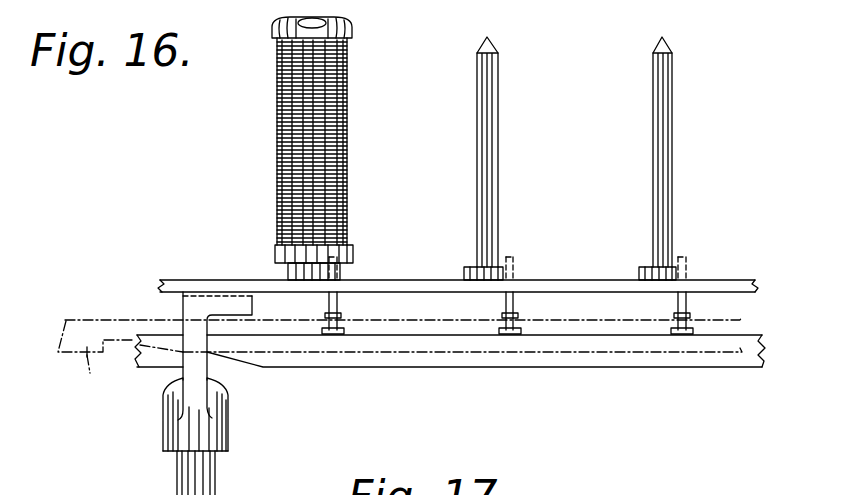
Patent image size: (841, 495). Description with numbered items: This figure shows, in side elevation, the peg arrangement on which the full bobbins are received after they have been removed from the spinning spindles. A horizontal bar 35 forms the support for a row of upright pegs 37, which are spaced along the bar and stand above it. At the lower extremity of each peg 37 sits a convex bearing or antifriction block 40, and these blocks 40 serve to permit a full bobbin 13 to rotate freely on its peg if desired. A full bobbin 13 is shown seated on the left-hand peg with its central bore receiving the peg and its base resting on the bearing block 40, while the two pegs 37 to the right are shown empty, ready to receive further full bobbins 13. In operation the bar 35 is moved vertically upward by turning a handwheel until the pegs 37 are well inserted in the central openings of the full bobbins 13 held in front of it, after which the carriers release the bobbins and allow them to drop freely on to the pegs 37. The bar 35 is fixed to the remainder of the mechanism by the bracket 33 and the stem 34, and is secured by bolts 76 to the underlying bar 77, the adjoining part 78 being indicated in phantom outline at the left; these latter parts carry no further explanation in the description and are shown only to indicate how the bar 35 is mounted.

The full bobbin 13 is at (278, 128).
The bracket 33 is at (195, 313).
The stem socket 34 is at (208, 428).
The bar 35 is at (170, 280).
The peg 37 is at (658, 72).
The convex bearing block 40 is at (290, 272).
The bolts 76 is at (338, 302).
The bar 77 is at (498, 342).
The phantom part 78 is at (148, 358).